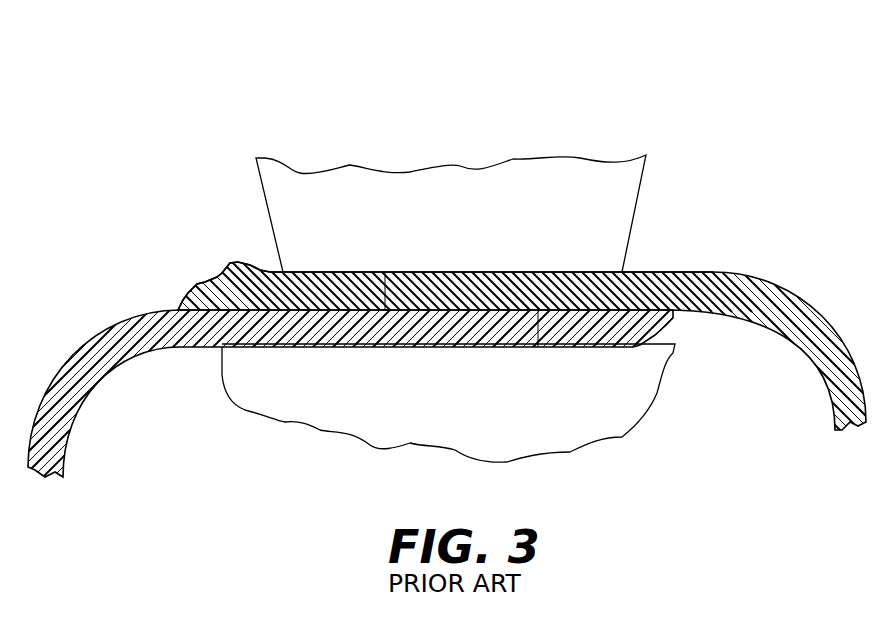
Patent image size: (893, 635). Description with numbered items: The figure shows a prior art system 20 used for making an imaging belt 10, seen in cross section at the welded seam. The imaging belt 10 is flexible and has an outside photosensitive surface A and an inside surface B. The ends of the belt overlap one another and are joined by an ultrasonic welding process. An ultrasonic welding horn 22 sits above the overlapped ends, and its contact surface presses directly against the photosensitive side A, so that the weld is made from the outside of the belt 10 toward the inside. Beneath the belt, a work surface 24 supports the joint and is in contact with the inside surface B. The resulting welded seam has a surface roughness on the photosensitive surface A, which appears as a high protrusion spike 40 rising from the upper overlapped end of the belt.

The prior art system 20 is at (715, 118).
The ultrasonic welding horn 22 is at (270, 198).
The work surface 24 is at (633, 344).
The imaging belt 10 is at (782, 290).
The outside photosensitive surface A is at (665, 272).
The inside surface B is at (193, 348).
The high protrusion spike 40 is at (226, 262).